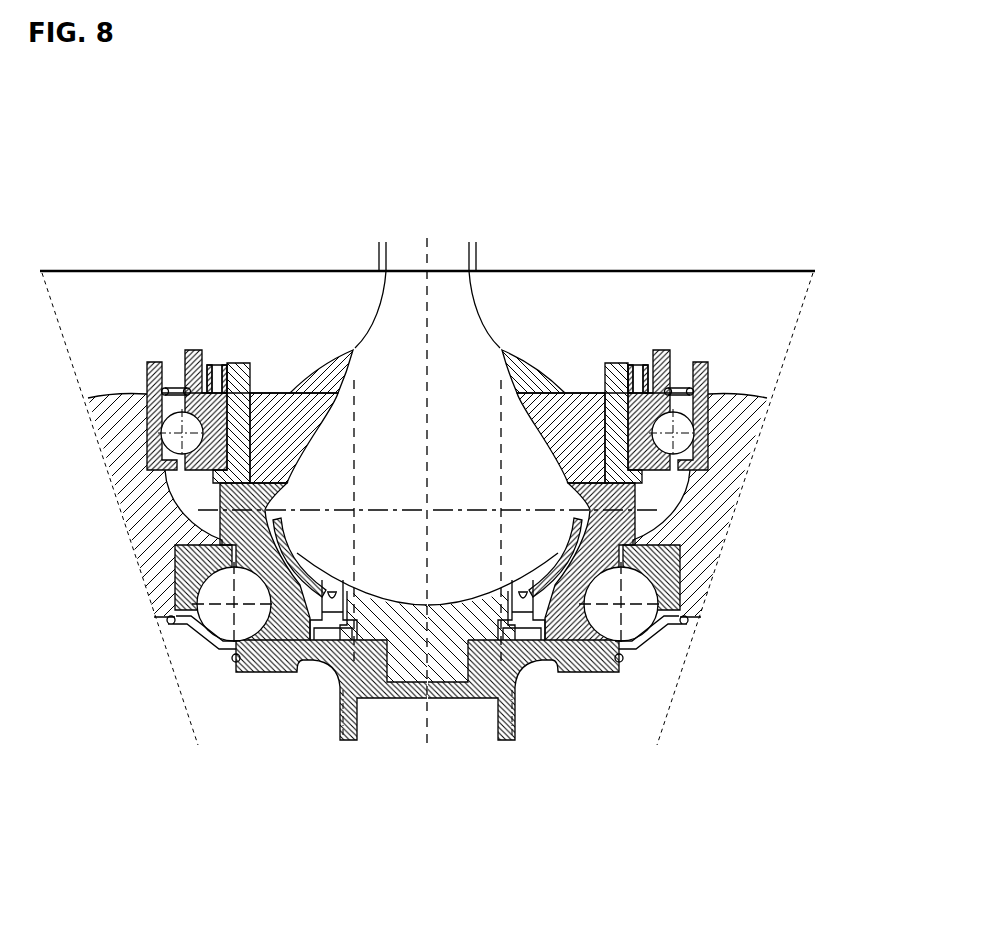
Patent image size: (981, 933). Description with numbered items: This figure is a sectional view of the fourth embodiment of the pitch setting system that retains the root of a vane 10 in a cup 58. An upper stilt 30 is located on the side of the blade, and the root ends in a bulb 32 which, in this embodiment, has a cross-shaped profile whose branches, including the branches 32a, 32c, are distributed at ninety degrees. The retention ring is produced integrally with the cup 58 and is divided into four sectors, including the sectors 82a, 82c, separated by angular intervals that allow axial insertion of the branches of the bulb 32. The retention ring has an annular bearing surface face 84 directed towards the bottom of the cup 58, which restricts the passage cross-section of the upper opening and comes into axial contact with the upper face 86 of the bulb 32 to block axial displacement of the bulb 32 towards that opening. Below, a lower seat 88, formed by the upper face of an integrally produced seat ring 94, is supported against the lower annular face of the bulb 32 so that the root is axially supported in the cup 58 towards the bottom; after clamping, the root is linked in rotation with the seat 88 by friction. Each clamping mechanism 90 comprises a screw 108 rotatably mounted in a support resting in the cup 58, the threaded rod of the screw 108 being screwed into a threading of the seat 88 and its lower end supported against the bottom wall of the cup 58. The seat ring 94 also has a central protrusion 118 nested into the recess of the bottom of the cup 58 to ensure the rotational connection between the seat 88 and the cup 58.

The vane 10 is at (202, 504).
The upper stilt 30 is at (453, 281).
The bulb 32 is at (472, 453).
The branch of the bulb 32a is at (312, 482).
The branch of the bulb 32c is at (622, 506).
The cup 58 is at (642, 546).
The sector of the retention ring 82a is at (316, 393).
The sector of the retention ring 82c is at (521, 375).
The bearing surface face 84 is at (327, 420).
The upper face of the bulb 86 is at (288, 393).
The lower seat 88 is at (300, 553).
The clamping mechanism 90 is at (353, 658).
The seat ring 94 is at (298, 578).
The screw 108 is at (331, 610).
The central protrusion 118 is at (447, 660).